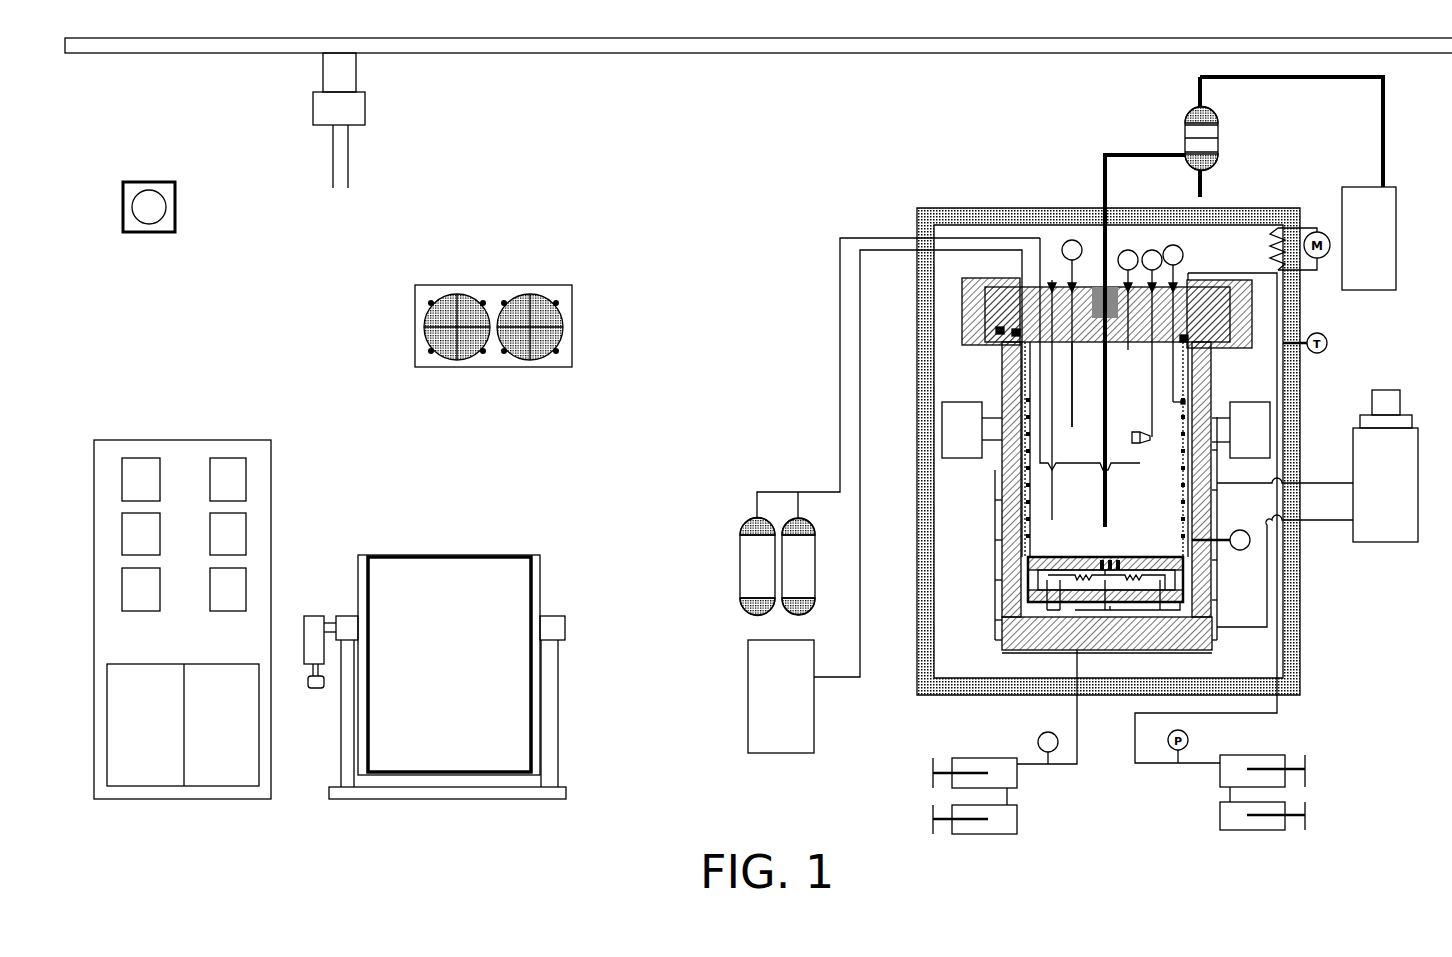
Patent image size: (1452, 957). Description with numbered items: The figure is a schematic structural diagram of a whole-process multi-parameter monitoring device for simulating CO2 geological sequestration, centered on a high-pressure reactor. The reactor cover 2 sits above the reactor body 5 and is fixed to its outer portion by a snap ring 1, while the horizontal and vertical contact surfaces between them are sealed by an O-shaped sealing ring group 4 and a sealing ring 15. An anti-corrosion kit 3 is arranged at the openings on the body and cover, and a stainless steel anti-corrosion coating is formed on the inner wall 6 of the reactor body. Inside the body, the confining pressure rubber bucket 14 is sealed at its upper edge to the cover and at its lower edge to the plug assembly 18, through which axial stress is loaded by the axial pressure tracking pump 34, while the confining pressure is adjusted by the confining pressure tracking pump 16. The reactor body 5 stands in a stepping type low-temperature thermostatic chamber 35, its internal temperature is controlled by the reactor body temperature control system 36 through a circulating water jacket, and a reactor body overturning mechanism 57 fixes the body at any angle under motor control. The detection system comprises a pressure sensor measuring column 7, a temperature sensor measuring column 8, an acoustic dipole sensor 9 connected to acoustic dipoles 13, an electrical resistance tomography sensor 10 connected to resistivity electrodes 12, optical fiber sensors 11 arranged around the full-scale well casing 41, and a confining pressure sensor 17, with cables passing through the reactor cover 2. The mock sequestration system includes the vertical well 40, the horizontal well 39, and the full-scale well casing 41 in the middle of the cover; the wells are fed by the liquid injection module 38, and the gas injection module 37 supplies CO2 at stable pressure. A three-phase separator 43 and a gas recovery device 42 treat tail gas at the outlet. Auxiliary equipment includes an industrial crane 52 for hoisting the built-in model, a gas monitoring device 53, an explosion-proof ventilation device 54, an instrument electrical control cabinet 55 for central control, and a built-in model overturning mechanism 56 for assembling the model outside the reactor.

The snap ring 1 is at (960, 345).
The reactor cover 2 is at (1020, 288).
The anti-corrosion kit 3 is at (1100, 285).
The O-shaped sealing ring group 4 is at (1013, 340).
The reactor body 5 is at (1000, 650).
The inner wall of the reactor body 6 is at (1020, 606).
The pressure sensor measuring column 7 is at (1068, 238).
The temperature sensor measuring column 8 is at (1127, 248).
The acoustic dipole sensor 9 is at (1152, 248).
The electrical resistance tomography sensor 10 is at (1180, 245).
The optical fiber sensors 11 is at (1253, 540).
The resistivity electrodes 12 is at (1180, 418).
The acoustic dipoles 13 is at (1144, 448).
The confining pressure rubber bucket 14 is at (1183, 540).
The sealing ring 15 is at (1178, 345).
The confining pressure tracking pump 16 is at (928, 800).
The confining pressure sensor 17 is at (1037, 738).
The plug assembly 18 is at (1181, 602).
The axial pressure tracking pump 34 is at (1216, 808).
The stepping type low-temperature thermostatic chamber 35 is at (1303, 626).
The reactor body temperature control system 36 is at (1387, 388).
The gas injection module 37 is at (737, 578).
The liquid injection module 38 is at (745, 687).
The horizontal well 39 is at (1068, 468).
The vertical well 40 is at (1056, 514).
The full-scale well casing 41 is at (1088, 428).
The gas recovery device 42 is at (1401, 218).
The three-phase separator 43 is at (1225, 143).
The industrial crane 52 is at (370, 128).
The gas monitoring device 53 is at (179, 212).
The explosion-proof ventilation device 54 is at (568, 367).
The instrument electrical control cabinet 55 is at (151, 437).
The built-in model overturning mechanism 56 is at (567, 648).
The reactor body overturning mechanism 57 is at (1106, 430).